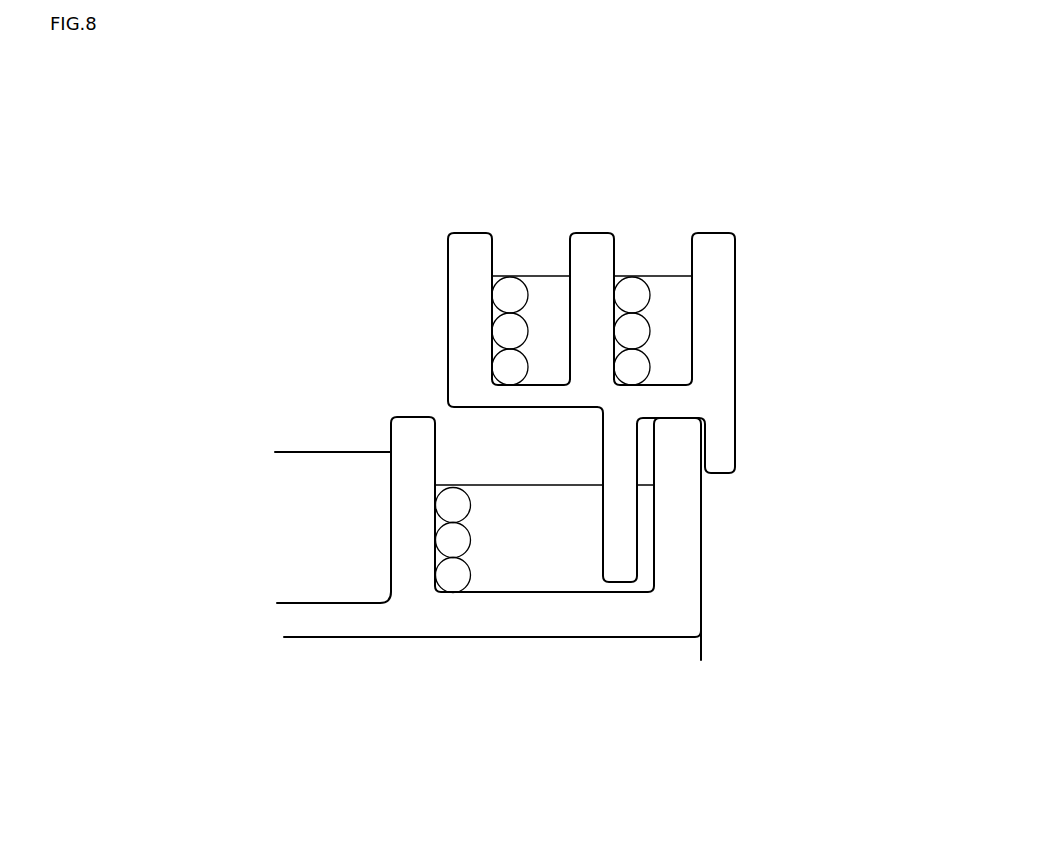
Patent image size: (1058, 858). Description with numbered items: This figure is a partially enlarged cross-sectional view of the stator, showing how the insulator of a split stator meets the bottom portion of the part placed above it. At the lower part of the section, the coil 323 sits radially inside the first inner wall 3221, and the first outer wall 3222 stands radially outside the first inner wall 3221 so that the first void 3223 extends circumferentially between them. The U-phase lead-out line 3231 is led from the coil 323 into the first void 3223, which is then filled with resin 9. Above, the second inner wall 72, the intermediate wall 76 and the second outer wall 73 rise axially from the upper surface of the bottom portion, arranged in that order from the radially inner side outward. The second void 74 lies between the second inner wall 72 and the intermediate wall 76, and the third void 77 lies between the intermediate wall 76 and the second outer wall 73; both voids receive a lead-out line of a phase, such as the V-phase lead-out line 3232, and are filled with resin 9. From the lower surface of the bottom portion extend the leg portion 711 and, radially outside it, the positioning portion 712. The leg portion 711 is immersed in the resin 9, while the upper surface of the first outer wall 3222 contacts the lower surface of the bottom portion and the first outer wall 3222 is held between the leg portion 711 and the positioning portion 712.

The second inner wall 72 is at (463, 247).
The second outer wall 73 is at (718, 273).
The second void 74 is at (547, 243).
The intermediate wall 76 is at (594, 257).
The third void 77 is at (656, 245).
The resin 9 is at (548, 291).
The V-phase lead-out line 3232 is at (507, 333).
The U-phase lead-out line 3231 is at (452, 503).
The leg portion 711 is at (622, 518).
The positioning portion 712 is at (718, 428).
The coil 323 is at (323, 527).
The first inner wall 3221 is at (408, 570).
The first outer wall 3222 is at (678, 587).
The first void 3223 is at (525, 557).